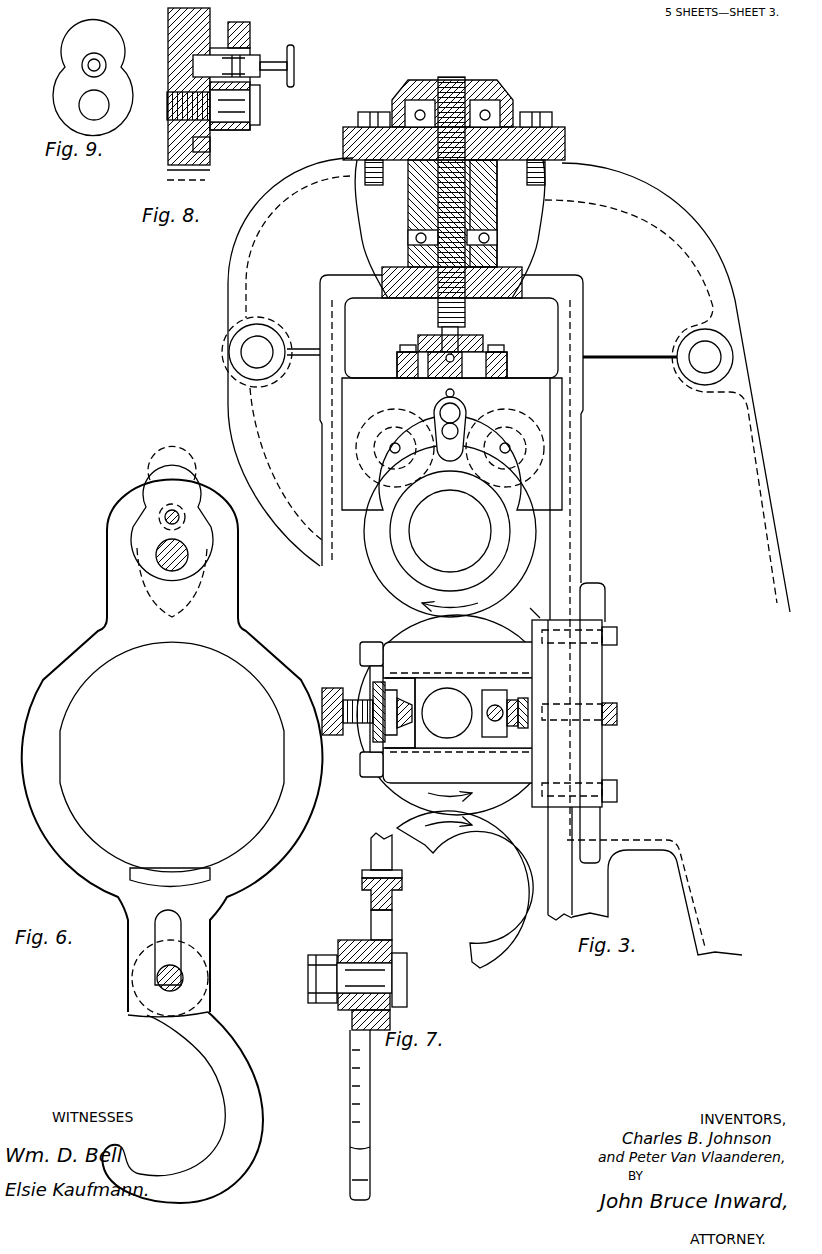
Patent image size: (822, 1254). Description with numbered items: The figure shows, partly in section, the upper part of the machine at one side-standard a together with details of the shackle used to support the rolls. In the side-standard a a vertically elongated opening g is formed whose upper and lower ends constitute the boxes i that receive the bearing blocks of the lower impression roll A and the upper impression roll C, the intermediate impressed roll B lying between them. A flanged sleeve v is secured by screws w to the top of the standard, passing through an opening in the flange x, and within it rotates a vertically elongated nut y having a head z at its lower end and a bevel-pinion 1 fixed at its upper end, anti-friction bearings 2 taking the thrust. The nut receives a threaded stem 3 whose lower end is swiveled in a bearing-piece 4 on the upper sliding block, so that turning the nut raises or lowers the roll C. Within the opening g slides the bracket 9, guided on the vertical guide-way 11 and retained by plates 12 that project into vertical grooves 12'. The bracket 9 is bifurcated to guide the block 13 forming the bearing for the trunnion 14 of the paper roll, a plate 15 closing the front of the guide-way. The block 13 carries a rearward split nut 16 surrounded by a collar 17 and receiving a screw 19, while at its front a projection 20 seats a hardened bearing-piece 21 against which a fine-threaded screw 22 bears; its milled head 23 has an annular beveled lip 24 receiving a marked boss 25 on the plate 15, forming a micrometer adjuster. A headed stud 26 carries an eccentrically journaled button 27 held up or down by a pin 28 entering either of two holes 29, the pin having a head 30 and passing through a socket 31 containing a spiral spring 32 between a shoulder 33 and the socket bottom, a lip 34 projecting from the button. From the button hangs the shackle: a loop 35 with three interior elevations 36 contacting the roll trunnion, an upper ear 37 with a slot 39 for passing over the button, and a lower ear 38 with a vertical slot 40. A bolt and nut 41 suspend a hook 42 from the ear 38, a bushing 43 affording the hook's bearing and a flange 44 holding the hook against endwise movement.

In FIG. 3, the bevel-pinion 1 is at (500, 97).
In FIG. 3, the anti-friction bearings 2 is at (500, 115).
In FIG. 3, the threaded stem 3 is at (465, 318).
In FIG. 3, the bearing-piece 4 is at (483, 344).
In FIG. 3, the vertically sliding bracket 9 is at (529, 606).
In FIG. 3, the vertical guide-way 11 is at (550, 833).
In FIG. 3, the plates 12 is at (607, 810).
In FIG. 3, the vertical grooves 12' is at (654, 886).
In FIG. 3, the block 13 is at (428, 740).
In FIG. 3, the trunnion 14 is at (447, 713).
In FIG. 3, the plate 15 is at (383, 775).
In FIG. 3, the split hub or nut 16 is at (495, 746).
In FIG. 3, the collar 17 is at (470, 737).
In FIG. 3, the screw 19 is at (530, 743).
In FIG. 3, the projection 20 is at (380, 745).
In FIG. 3, the hardened bearing-piece 21 is at (373, 735).
In FIG. 3, the fine-threaded screw 22 is at (365, 727).
In FIG. 3, the milled head 23 is at (324, 700).
In FIG. 3, the annular beveled lip 24 is at (376, 690).
In FIG. 3, the boss 25 is at (400, 692).
In FIG. 3, the headed stud 26 is at (444, 420).
In FIG. 8, the headed stud 26 is at (261, 116).
In FIG. 3, the button 27 is at (462, 425).
In FIG. 6, the button 27 is at (165, 525).
In FIG. 8, the button 27 is at (228, 130).
In FIG. 9, the button 27 is at (83, 101).
In FIG. 8, the pin 28 is at (248, 58).
In FIG. 8, the holes 29 is at (200, 60).
In FIG. 3, the head 30 is at (446, 432).
In FIG. 8, the head 30 is at (293, 70).
In FIG. 8, the socket 31 is at (255, 90).
In FIG. 8, the spiral spring 32 is at (208, 106).
In FIG. 9, the spiral spring 32 is at (100, 73).
In FIG. 8, the shoulder 33 is at (200, 58).
In FIG. 6, the lip 34 is at (174, 464).
In FIG. 8, the lip 34 is at (250, 30).
In FIG. 9, the lip 34 is at (93, 78).
In FIG. 6, the loop 35 is at (63, 657).
In FIG. 7, the loop 35 is at (393, 898).
In FIG. 6, the interior elevations 36 is at (58, 768).
In FIG. 6, the upwardly projecting ear 37 is at (238, 595).
In FIG. 6, the downwardly projecting ear 38 is at (208, 938).
In FIG. 6, the slot 39 is at (205, 576).
In FIG. 6, the vertical slot 40 is at (158, 926).
In FIG. 6, the bolt and nut 41 is at (165, 990).
In FIG. 7, the bolt and nut 41 is at (407, 980).
In FIG. 6, the hook 42 is at (258, 1105).
In FIG. 7, the hook 42 is at (370, 1100).
In FIG. 7, the bushing 43 is at (372, 958).
In FIG. 7, the flange 44 is at (350, 950).
In FIG. 3, the side-standard a is at (765, 474).
In FIG. 3, the screws w is at (553, 120).
In FIG. 3, the flange x is at (545, 225).
In FIG. 3, the nut y is at (415, 215).
In FIG. 3, the flanged sleeve v is at (498, 218).
In FIG. 3, the head z is at (408, 258).
In FIG. 3, the box i is at (545, 523).
In FIG. 3, the opening g is at (540, 588).
In FIG. 3, the upper impression roll C is at (431, 556).
In FIG. 3, the impressed roll B is at (368, 690).
In FIG. 3, the lower impression roll A is at (463, 852).